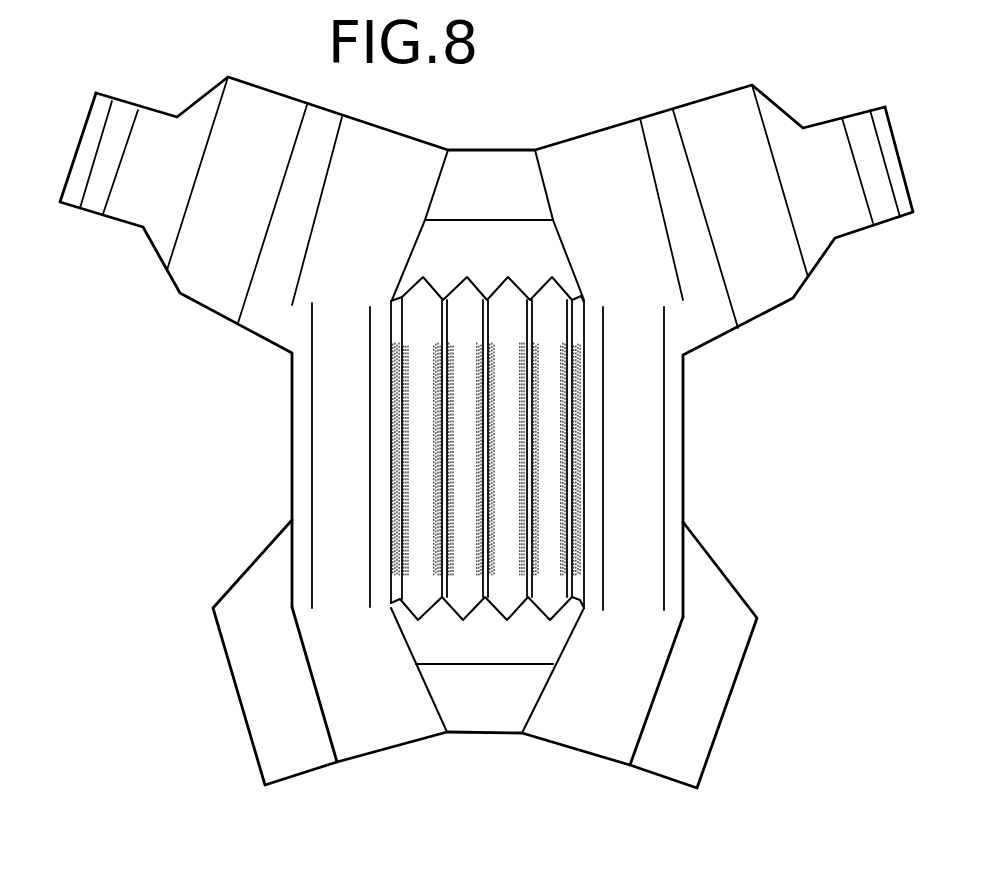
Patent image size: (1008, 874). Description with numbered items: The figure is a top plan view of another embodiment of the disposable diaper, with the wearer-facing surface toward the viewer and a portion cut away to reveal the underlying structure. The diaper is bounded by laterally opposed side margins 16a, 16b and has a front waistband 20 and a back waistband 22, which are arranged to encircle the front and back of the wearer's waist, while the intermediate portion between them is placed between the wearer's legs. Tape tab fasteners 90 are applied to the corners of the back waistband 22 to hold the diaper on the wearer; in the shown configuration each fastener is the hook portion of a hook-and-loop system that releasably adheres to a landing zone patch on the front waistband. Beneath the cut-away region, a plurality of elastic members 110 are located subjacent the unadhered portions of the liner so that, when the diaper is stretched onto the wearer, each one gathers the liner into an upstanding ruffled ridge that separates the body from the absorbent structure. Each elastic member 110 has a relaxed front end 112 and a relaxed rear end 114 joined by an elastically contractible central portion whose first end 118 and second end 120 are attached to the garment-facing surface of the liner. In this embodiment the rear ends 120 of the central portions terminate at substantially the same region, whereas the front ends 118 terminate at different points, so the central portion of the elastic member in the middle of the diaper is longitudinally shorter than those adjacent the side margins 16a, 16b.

The side margin 16a is at (683, 418).
The side margin 16b is at (290, 424).
The front waistband 20 is at (492, 700).
The back waistband 22 is at (505, 180).
The tape tab fastener 90 is at (825, 150).
The elastic member 110 is at (528, 477).
The front end of elastic member 112 is at (530, 597).
The rear end of elastic member 114 is at (443, 300).
The first end of central portion 118 is at (535, 527).
The second end of central portion 120 is at (530, 350).